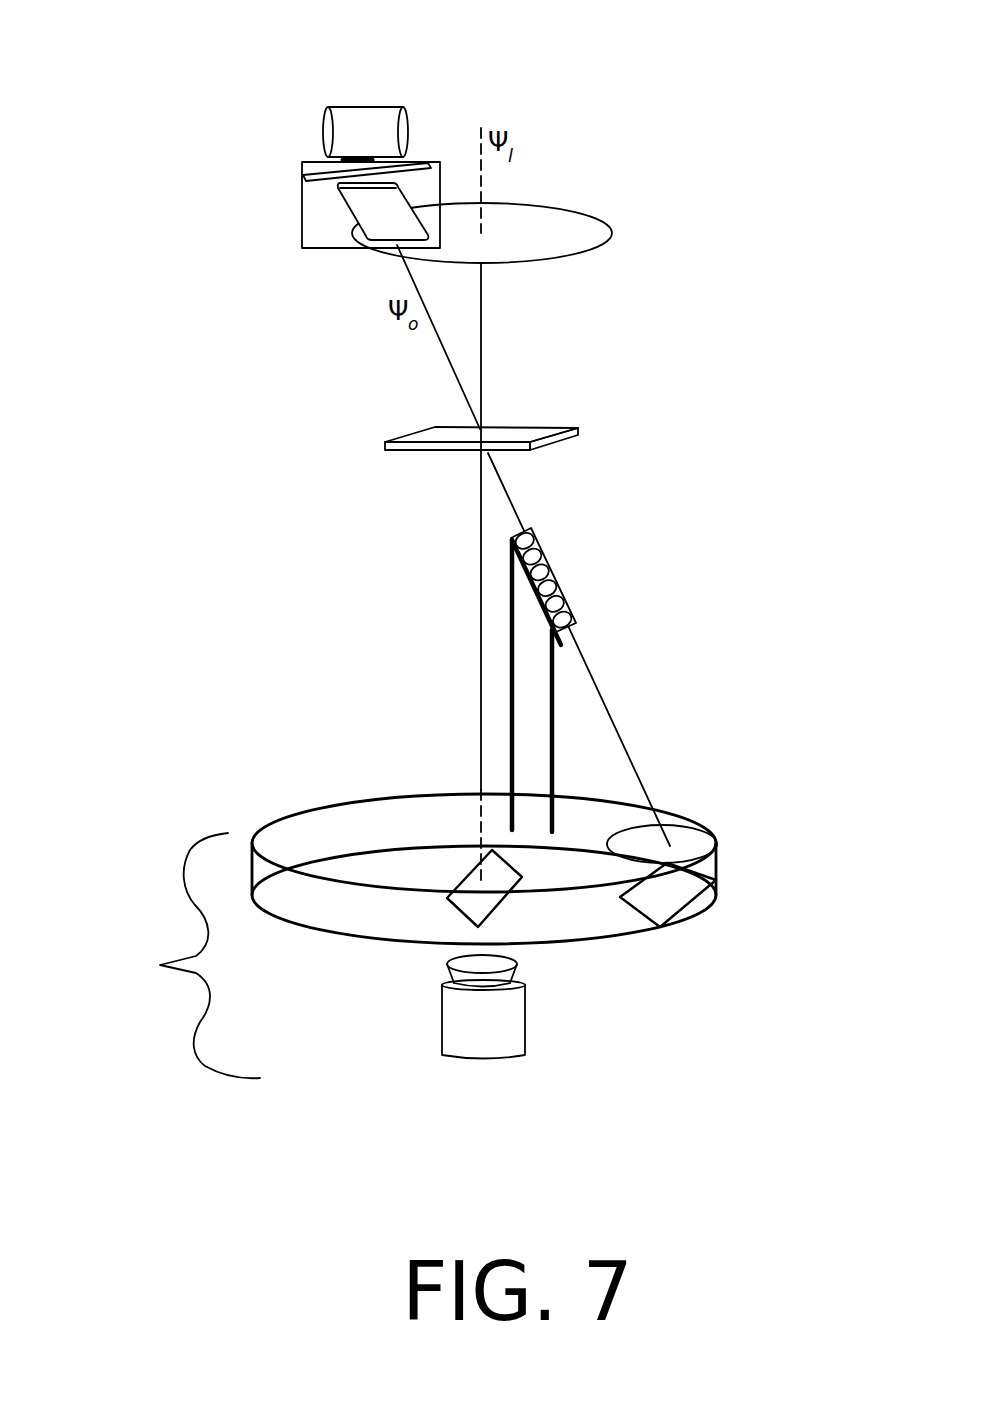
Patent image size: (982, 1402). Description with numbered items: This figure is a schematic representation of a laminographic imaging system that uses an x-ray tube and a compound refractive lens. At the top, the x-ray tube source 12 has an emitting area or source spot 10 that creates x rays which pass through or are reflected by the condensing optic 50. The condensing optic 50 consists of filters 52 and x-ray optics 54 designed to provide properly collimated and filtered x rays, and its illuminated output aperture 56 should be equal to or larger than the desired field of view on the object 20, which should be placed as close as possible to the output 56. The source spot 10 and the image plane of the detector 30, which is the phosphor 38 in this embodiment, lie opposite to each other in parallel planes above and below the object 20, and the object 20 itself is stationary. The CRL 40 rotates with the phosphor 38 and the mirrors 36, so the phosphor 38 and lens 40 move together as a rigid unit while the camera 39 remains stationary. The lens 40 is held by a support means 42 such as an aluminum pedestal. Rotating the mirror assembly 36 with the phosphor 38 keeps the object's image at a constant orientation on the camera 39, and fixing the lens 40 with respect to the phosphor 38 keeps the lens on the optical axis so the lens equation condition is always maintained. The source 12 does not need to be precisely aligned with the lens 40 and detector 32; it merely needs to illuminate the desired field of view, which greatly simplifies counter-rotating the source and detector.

The x-ray source spot 10 is at (414, 164).
The x-ray tube source 12 is at (362, 107).
The object 20 is at (380, 452).
The detector 30 is at (727, 843).
The detector 32 is at (176, 955).
The mirror assembly 36 is at (497, 910).
The phosphor 38 is at (683, 814).
The camera 39 is at (503, 1065).
The CRL 40 is at (583, 588).
The support means 42 is at (562, 690).
The condensing optic 50 is at (297, 205).
The filters 52 is at (352, 223).
The x-ray optics 54 is at (303, 177).
The output aperture of the optic 56 is at (393, 250).